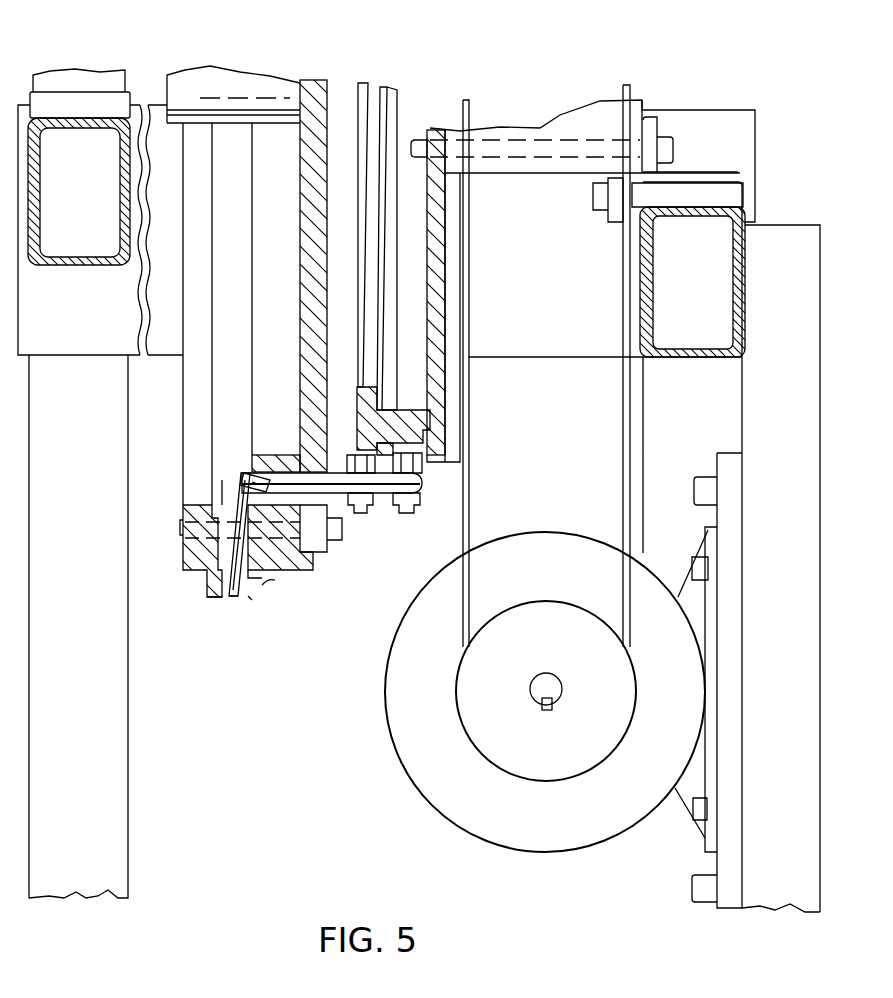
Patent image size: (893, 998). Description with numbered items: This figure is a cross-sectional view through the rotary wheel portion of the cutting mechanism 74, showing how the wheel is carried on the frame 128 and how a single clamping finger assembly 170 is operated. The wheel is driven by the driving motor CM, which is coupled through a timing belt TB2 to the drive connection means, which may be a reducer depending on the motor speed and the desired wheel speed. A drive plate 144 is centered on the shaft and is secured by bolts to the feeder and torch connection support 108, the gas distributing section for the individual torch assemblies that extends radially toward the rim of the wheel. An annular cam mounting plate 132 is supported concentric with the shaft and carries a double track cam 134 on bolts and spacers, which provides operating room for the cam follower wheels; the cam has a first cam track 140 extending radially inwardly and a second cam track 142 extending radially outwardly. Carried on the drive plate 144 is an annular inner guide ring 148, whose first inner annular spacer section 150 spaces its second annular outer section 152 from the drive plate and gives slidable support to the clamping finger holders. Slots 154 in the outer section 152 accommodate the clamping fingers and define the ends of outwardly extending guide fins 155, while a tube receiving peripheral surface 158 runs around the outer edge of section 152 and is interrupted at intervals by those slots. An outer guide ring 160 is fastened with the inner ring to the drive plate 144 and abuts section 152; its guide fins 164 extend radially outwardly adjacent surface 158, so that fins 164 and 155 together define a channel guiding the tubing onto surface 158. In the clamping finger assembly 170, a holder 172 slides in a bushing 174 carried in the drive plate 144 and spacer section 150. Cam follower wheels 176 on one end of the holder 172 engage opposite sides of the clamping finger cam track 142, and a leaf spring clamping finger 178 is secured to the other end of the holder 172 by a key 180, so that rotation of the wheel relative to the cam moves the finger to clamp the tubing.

The cutting mechanism 74 is at (146, 490).
The feeder and torch connection support 108 is at (248, 85).
The frame 128 is at (115, 836).
The cam mounting plate 132 is at (452, 410).
The double track cam 134 is at (390, 257).
The first cam track 140 is at (360, 362).
The second cam track 142 is at (381, 500).
The drive plate 144 is at (312, 82).
The inner guide ring 148 is at (266, 572).
The first inner annular spacer section 150 is at (292, 455).
The second annular outer section 152 is at (223, 500).
The slots 154 is at (262, 585).
The guide fins 155 is at (250, 598).
The tube receiving peripheral surface 158 is at (228, 598).
The outer guide ring 160 is at (186, 572).
The guide fins 164 is at (215, 600).
The clamping finger assembly 170 is at (340, 460).
The holder 172 is at (365, 505).
The bushing 174 is at (322, 503).
The cam follower wheels 176 is at (416, 472).
The leaf spring clamping finger 178 is at (240, 600).
The key 180 is at (228, 505).
The timing belt TB2 is at (618, 452).
The driving motor CM is at (420, 797).